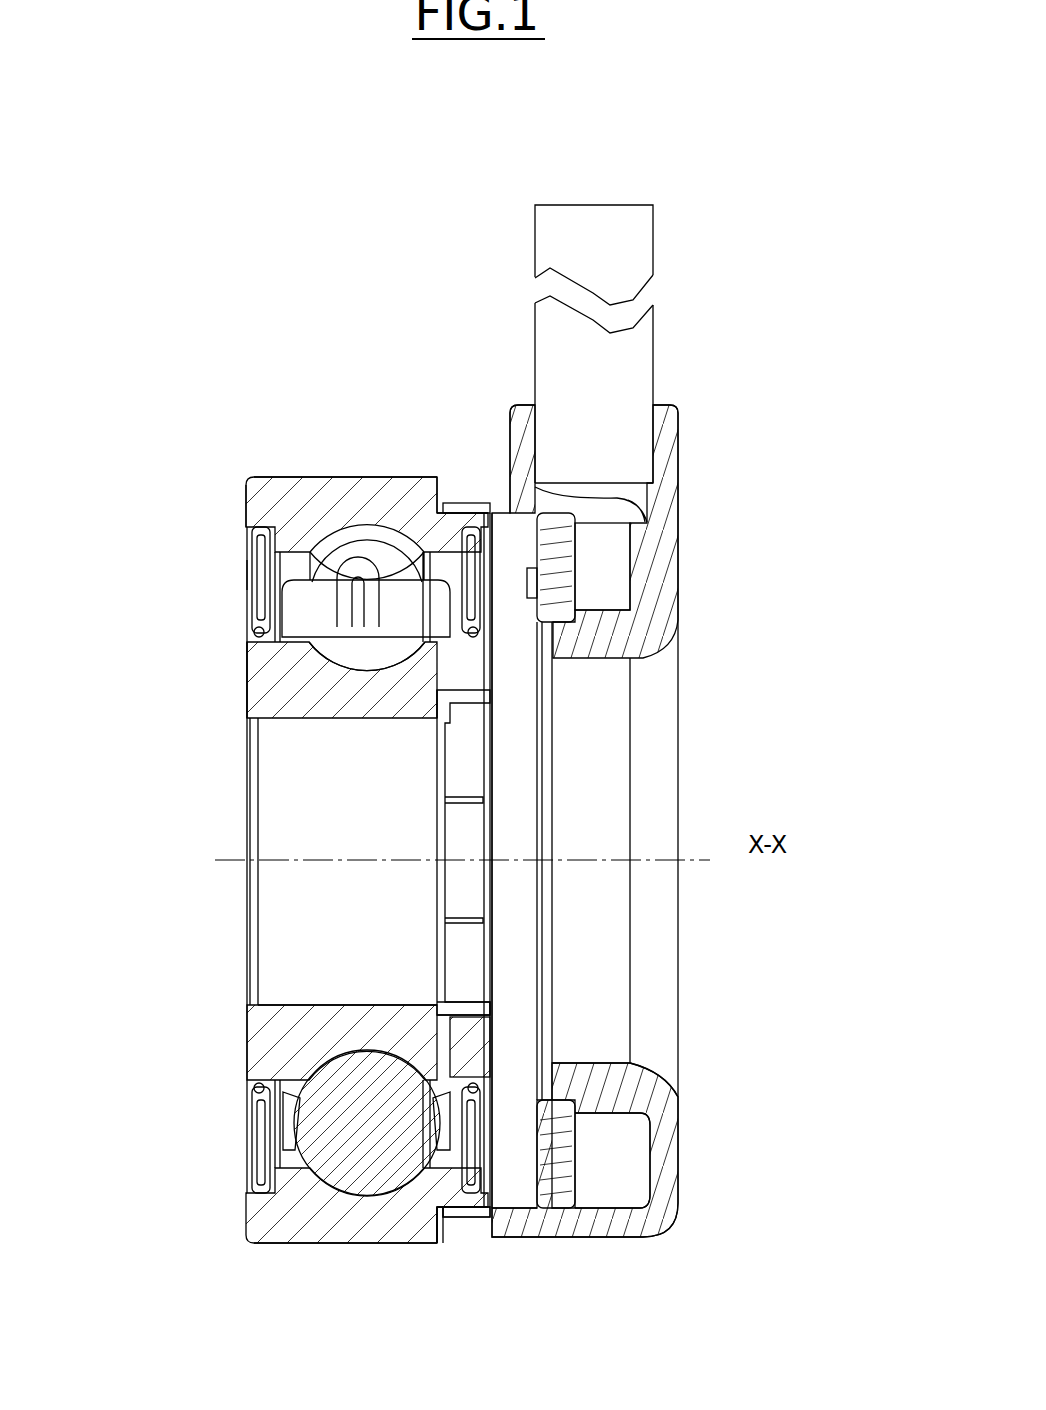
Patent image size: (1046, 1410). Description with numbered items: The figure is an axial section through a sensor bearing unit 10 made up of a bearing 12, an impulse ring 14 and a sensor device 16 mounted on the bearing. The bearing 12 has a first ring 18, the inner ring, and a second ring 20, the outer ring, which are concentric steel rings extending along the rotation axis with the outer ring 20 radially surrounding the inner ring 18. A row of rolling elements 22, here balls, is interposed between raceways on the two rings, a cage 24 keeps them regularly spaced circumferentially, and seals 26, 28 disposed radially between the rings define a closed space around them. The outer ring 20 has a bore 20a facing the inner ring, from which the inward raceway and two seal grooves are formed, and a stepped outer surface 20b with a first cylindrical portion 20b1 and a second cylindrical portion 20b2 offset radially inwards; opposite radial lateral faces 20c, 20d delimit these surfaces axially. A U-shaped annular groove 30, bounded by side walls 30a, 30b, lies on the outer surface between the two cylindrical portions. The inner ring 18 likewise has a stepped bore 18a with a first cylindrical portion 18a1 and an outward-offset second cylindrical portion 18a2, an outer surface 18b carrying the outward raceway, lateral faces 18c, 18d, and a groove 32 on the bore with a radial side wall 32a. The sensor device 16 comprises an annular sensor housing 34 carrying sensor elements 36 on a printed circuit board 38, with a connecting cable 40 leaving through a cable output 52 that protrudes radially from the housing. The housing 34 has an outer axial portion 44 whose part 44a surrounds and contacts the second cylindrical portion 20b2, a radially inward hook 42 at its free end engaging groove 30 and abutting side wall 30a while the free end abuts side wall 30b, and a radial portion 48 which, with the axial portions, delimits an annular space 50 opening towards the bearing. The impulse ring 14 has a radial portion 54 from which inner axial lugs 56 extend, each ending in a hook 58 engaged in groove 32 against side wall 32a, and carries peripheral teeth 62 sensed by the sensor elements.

The sensor bearing unit 10 is at (383, 336).
The bearing 12 is at (203, 616).
The impulse ring 14 is at (495, 708).
The sensor device 16 is at (703, 500).
The first ring 18 is at (270, 700).
The bore 18a is at (326, 722).
The first cylindrical portion 18a1 is at (335, 1004).
The second cylindrical portion 18a2 is at (495, 1008).
The outer cylindrical surface 18b is at (247, 658).
The radial lateral face 18c is at (497, 690).
The radial lateral face 18d is at (247, 688).
The second ring 20 is at (297, 495).
The bore 20a is at (246, 576).
The outer cylindrical surface 20b is at (346, 474).
The first cylindrical portion 20b1 is at (346, 1246).
The second cylindrical portion 20b2 is at (482, 1242).
The radial lateral face 20c is at (500, 508).
The radial lateral face 20d is at (246, 526).
The rolling elements 22 is at (350, 1137).
The cage 24 is at (294, 623).
The seal 26 is at (253, 616).
The seal 28 is at (438, 503).
The groove 30 is at (446, 501).
The side wall 30a is at (390, 1246).
The side wall 30b is at (441, 1222).
The groove 32 is at (472, 765).
The radial side wall 32a is at (492, 1078).
The sensor housing 34 is at (681, 556).
The sensor elements 36 is at (540, 588).
The printed circuit board 38 is at (580, 560).
The connecting cable 40 is at (617, 390).
The annular hook 42 is at (449, 1240).
The outer axial portion 44 is at (552, 1238).
The part of the outer axial portion 44a is at (476, 1238).
The radial portion 48 is at (668, 1150).
The annular space 50 is at (625, 1238).
The cable output 52 is at (665, 433).
The radial portion 54 is at (492, 1045).
The inner axial lugs 56 is at (472, 1003).
The hook 58 is at (553, 735).
The teeth 62 is at (545, 623).